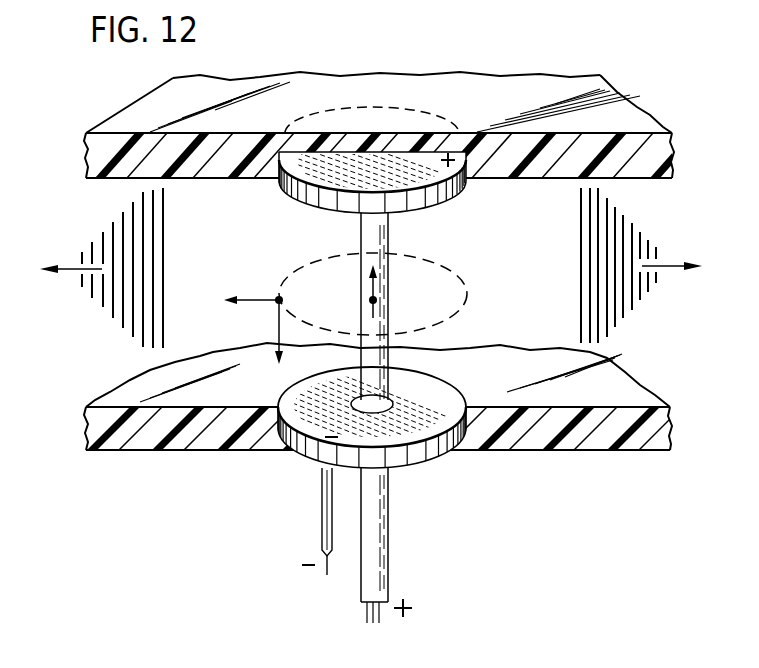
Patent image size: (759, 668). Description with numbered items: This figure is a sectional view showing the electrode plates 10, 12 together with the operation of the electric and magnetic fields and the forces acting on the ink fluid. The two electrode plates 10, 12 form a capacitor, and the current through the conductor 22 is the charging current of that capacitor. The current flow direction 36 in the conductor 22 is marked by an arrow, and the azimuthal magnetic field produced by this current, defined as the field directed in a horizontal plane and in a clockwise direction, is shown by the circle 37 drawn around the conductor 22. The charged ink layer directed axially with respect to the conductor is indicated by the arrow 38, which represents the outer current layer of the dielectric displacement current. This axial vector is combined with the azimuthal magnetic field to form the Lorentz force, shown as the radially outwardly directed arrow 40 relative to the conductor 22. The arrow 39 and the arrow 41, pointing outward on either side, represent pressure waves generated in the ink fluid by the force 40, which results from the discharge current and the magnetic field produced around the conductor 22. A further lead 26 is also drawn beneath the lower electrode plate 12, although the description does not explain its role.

The electrode plate 10 is at (293, 188).
The electrode plate 12 is at (417, 455).
The conductor 22 is at (375, 542).
The negative lead 26 is at (322, 528).
The current flow direction 36 is at (373, 301).
The circle 37 is at (427, 262).
The arrow 38 is at (279, 333).
The arrow 39 is at (70, 268).
The arrow 40 is at (253, 300).
The arrow 41 is at (666, 265).